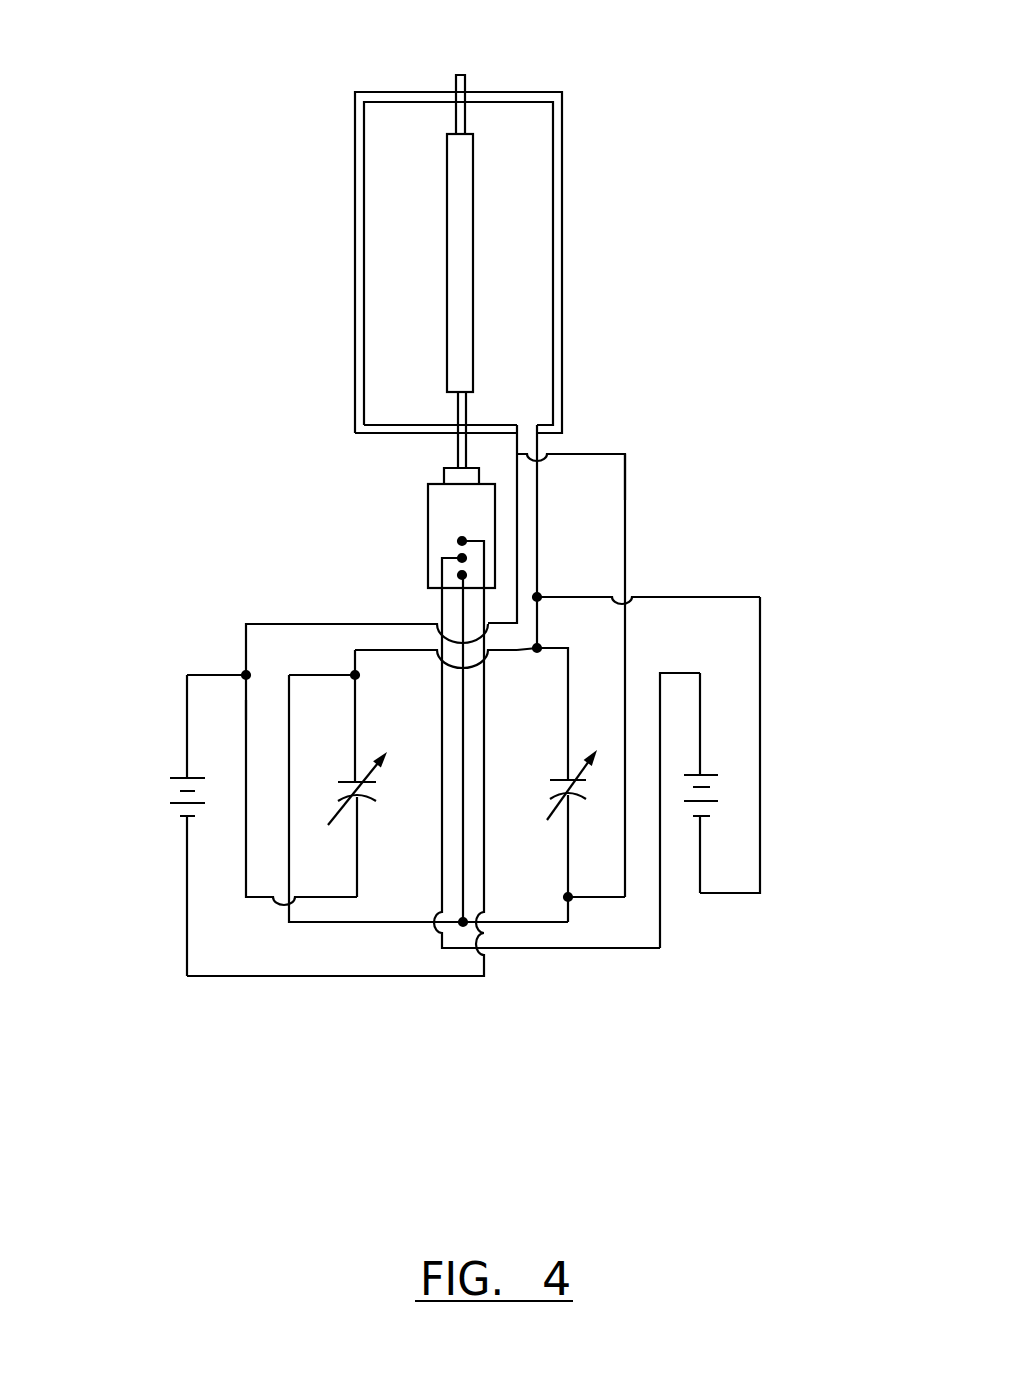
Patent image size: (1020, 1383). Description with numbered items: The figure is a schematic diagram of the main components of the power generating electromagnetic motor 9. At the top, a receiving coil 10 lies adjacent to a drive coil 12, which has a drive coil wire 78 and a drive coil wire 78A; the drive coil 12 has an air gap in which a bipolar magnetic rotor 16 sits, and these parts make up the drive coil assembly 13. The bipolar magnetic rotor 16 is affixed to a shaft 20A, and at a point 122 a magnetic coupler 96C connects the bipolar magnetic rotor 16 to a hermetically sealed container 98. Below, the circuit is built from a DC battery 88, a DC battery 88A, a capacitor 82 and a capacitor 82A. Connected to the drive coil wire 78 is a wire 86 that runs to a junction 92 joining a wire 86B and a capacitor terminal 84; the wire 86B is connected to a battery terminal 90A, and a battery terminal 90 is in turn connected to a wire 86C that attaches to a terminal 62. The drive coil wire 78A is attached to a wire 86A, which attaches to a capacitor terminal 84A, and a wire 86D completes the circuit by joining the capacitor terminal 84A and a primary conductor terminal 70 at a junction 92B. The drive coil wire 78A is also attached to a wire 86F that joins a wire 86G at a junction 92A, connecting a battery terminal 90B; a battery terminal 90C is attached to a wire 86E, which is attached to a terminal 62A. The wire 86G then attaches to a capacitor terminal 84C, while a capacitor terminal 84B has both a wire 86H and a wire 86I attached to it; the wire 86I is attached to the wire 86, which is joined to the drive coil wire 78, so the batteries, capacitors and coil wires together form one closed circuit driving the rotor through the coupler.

The power generating electromagnetic motor 9 is at (238, 402).
The receiving coil 10 is at (562, 170).
The drive coil 12 is at (527, 125).
The drive coil assembly 13 is at (284, 193).
The bipolar magnetic rotor 16 is at (458, 173).
The shaft 20A is at (463, 75).
The terminal 62 is at (462, 558).
The terminal 62A is at (462, 541).
The primary conductor terminal 70 is at (462, 575).
The drive coil wire 78 is at (537, 442).
The drive coil wire 78A is at (517, 485).
The capacitor 82 is at (590, 745).
The capacitor 82A is at (337, 790).
The capacitor terminal 84 is at (568, 648).
The capacitor terminal 84A is at (568, 897).
The capacitor terminal 84B is at (355, 675).
The capacitor terminal 84C is at (357, 897).
The wire 86 is at (538, 515).
The wire 86A is at (627, 537).
The wire 86B is at (760, 705).
The wire 86C is at (662, 890).
The wire 86D is at (568, 922).
The wire 86E is at (487, 880).
The wire 86F is at (246, 624).
The wire 86G is at (246, 850).
The wire 86H is at (289, 923).
The wire 86I is at (397, 650).
The DC battery 88 is at (717, 792).
The DC battery 88A is at (187, 842).
The battery terminal 90 is at (700, 728).
The battery terminal 90A is at (703, 872).
The battery terminal 90B is at (187, 725).
The battery terminal 90C is at (187, 976).
The junction 92 is at (538, 597).
The junction 92A is at (246, 675).
The junction 92B is at (463, 922).
The magnetic coupler 96C is at (447, 480).
The hermetically sealed container 98 is at (428, 512).
The point 122 is at (456, 470).